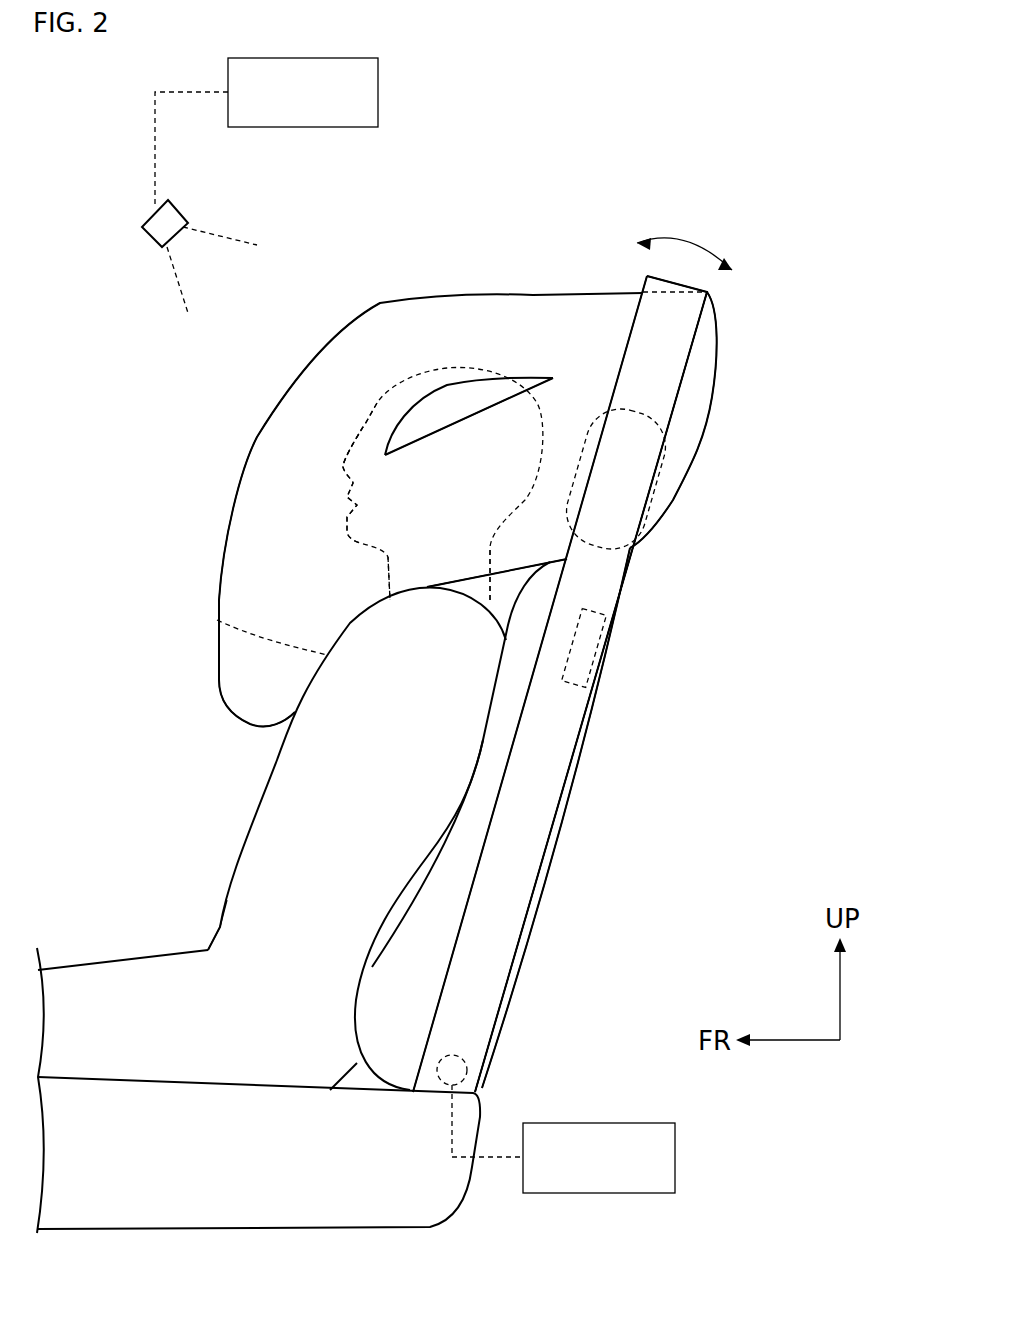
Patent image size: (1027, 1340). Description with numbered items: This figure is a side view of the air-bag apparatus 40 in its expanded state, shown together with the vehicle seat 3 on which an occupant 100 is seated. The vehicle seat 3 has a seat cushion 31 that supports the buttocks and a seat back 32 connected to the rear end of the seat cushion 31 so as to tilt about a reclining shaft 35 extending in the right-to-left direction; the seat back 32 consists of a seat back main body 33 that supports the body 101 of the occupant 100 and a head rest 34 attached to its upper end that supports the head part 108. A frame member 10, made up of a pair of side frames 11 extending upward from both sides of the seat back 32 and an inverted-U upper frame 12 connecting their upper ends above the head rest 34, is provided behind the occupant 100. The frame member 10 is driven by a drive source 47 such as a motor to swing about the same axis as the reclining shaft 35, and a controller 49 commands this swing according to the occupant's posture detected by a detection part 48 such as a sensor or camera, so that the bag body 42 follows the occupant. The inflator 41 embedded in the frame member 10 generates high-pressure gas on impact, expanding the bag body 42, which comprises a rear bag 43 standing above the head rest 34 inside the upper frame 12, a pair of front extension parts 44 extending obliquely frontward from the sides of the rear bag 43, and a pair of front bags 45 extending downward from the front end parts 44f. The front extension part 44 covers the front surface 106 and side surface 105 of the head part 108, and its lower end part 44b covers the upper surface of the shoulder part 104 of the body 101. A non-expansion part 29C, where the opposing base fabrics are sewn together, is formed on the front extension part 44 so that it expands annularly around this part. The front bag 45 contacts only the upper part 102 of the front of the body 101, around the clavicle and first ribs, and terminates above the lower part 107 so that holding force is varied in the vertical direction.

The vehicle seat 3 is at (592, 775).
The frame member 10 is at (704, 342).
The side frame 11 is at (567, 728).
The upper frame 12 is at (683, 280).
The non-expansion part 29C is at (487, 393).
The seat cushion 31 is at (125, 1095).
The seat back 32 is at (527, 957).
The seat back main body 33 is at (537, 910).
The head rest 34 is at (650, 412).
The reclining shaft 35 is at (463, 1058).
The air-bag apparatus 40 is at (328, 295).
The inflator 41 is at (603, 647).
The bag body 42 is at (300, 367).
The rear bag 43 is at (700, 437).
The front extension part 44 is at (553, 292).
The front end part 44f is at (225, 542).
The lower end part 44b is at (493, 623).
The front bag 45 is at (252, 678).
The drive source 47 is at (676, 1157).
The detection part 48 is at (182, 213).
The controller 49 is at (380, 95).
The occupant 100 is at (246, 811).
The body 101 is at (217, 922).
The upper part of front surface of body 102 is at (217, 620).
The shoulder part 104 is at (467, 585).
The side surface of head part 105 is at (440, 413).
The front surface of head part 106 is at (363, 435).
The lower part of front surface of body 107 is at (240, 855).
The head part 108 is at (353, 447).